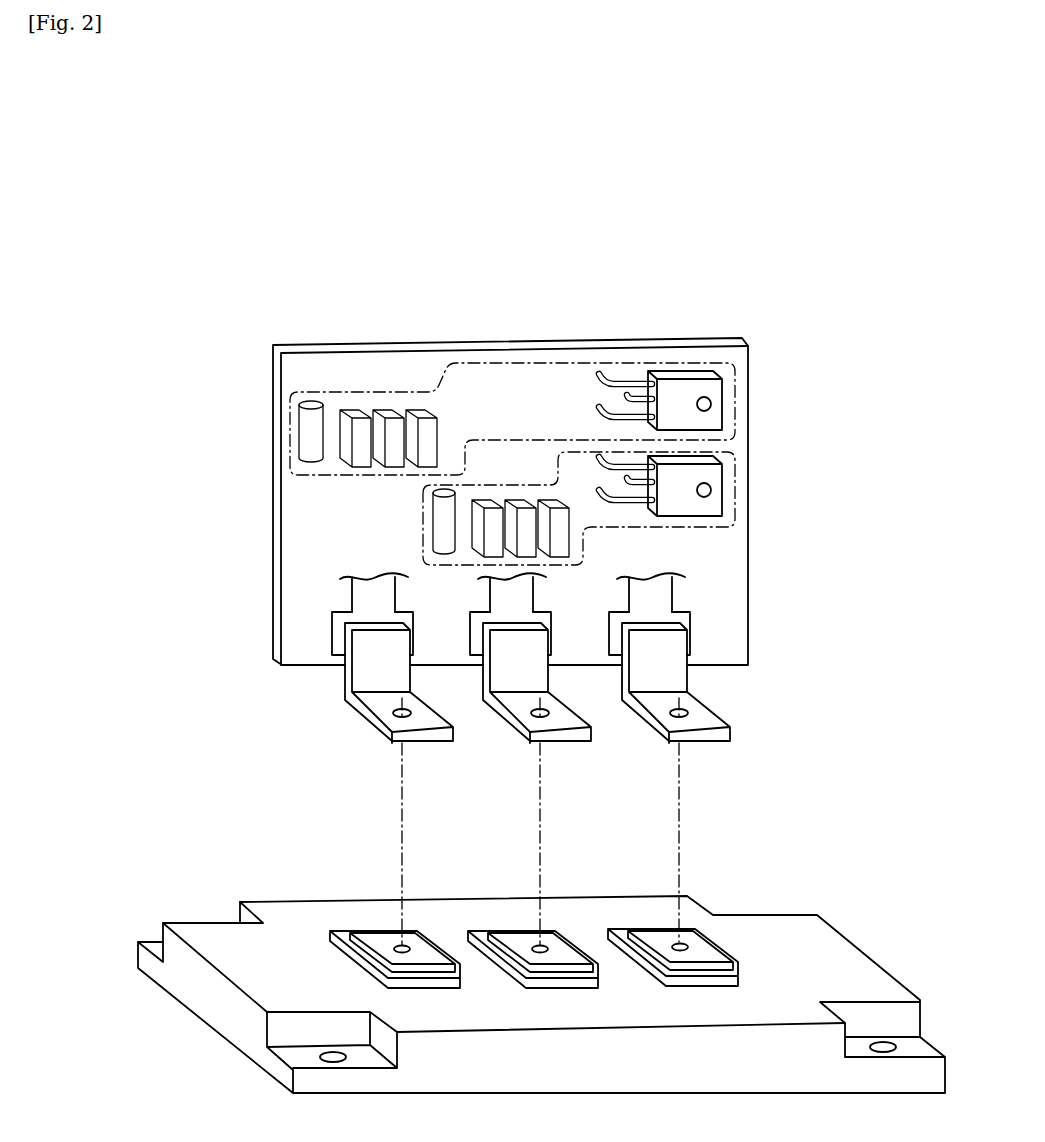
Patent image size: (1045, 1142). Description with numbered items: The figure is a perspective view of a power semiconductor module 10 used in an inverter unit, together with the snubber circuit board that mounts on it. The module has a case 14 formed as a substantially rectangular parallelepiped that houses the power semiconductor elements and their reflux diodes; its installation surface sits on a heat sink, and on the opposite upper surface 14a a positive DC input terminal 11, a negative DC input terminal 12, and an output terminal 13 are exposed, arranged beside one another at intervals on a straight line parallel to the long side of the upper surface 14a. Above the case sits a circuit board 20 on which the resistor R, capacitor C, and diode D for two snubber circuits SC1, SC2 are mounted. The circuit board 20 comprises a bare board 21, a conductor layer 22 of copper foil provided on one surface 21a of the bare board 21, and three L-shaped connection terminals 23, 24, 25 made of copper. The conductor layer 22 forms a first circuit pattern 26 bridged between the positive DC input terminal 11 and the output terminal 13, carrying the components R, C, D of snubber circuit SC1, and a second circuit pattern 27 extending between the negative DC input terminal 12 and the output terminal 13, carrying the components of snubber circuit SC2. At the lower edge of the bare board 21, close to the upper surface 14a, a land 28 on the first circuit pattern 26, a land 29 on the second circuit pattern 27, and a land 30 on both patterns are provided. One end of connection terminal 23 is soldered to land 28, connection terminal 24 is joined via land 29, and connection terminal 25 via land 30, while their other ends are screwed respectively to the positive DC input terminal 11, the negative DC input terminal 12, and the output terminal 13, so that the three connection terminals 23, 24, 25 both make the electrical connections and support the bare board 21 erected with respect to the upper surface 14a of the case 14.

The power semiconductor module 10 is at (279, 229).
The circuit board 20 is at (267, 383).
The bare board 21 is at (518, 342).
The one surface of the bare board 21a is at (414, 363).
The resistor R is at (311, 403).
The capacitor C is at (388, 412).
The diode D is at (683, 386).
The snubber circuit SC1 is at (735, 392).
The snubber circuit SC2 is at (735, 481).
The conductor layer 22 is at (205, 528).
The first circuit pattern 26 is at (352, 600).
The second circuit pattern 27 is at (493, 598).
The land 28 is at (332, 633).
The land 29 is at (473, 638).
The land 30 is at (608, 640).
The connection terminal 23 is at (368, 722).
The connection terminal 24 is at (515, 720).
The connection terminal 25 is at (655, 718).
The positive DC input terminal 11 is at (413, 943).
The negative DC input terminal 12 is at (558, 942).
The output terminal 13 is at (697, 940).
The case 14 is at (203, 1013).
The upper surface 14a is at (817, 935).